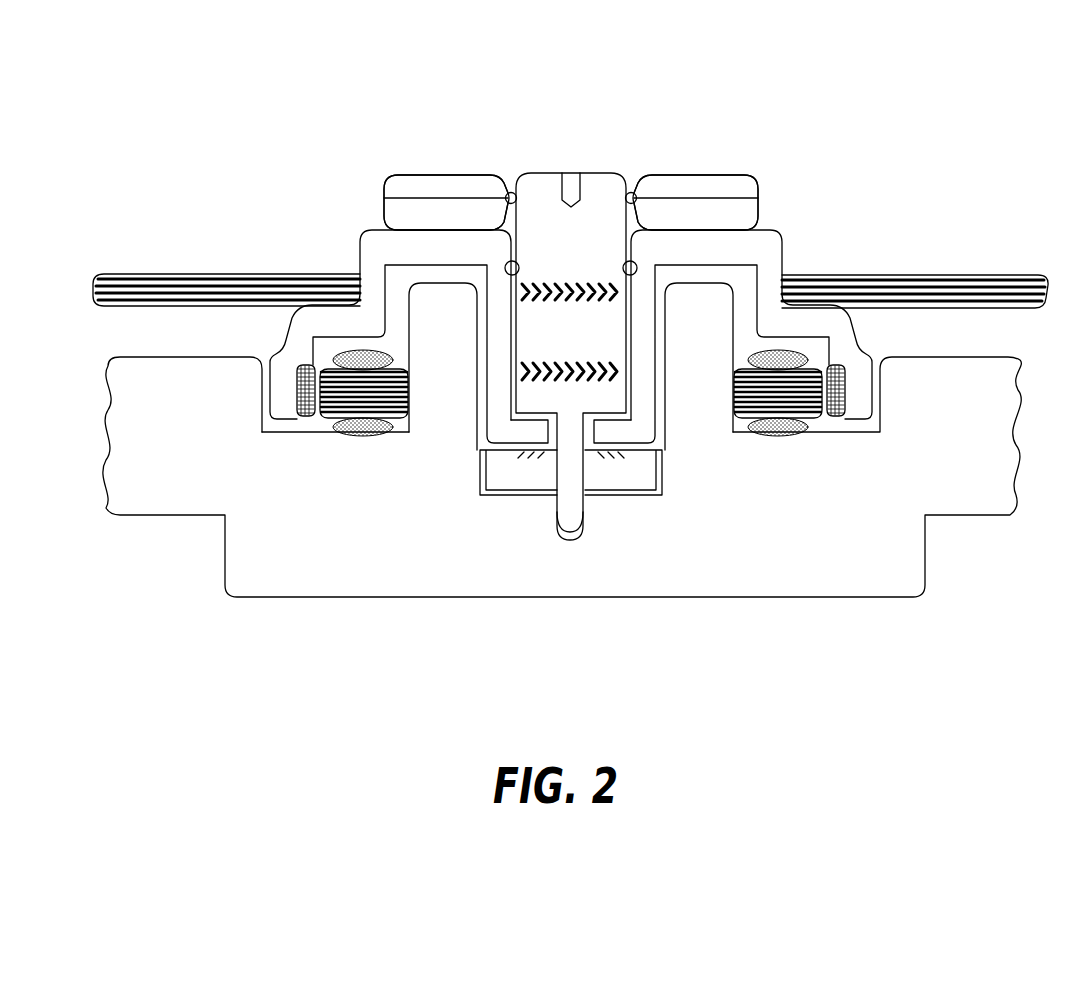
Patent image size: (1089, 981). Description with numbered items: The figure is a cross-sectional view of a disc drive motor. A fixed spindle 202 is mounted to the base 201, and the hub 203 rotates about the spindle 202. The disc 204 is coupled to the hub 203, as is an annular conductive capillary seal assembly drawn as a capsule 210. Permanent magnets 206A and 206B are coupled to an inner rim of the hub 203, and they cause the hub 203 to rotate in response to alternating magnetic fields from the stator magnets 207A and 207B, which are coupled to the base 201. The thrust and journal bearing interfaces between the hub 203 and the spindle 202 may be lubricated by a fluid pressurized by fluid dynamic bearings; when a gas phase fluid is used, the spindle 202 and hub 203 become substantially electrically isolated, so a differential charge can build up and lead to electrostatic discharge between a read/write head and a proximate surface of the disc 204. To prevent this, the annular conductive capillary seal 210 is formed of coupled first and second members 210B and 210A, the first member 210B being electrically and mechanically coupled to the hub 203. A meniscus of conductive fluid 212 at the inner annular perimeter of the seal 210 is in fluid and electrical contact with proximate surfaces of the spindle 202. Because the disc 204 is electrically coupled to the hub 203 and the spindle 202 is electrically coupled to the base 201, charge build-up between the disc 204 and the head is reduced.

The base 201 is at (991, 463).
The fixed spindle 202 is at (597, 338).
The hub 203 is at (375, 247).
The disc 204 is at (168, 277).
The permanent magnet 206A is at (283, 385).
The permanent magnet 206B is at (855, 397).
The stator magnet 207A is at (355, 395).
The stator magnet 207B is at (787, 392).
The annular conductive capillary seal 210 is at (490, 172).
The second member 210A is at (378, 187).
The first member 210B is at (405, 210).
The conductive fluid 212 is at (636, 194).